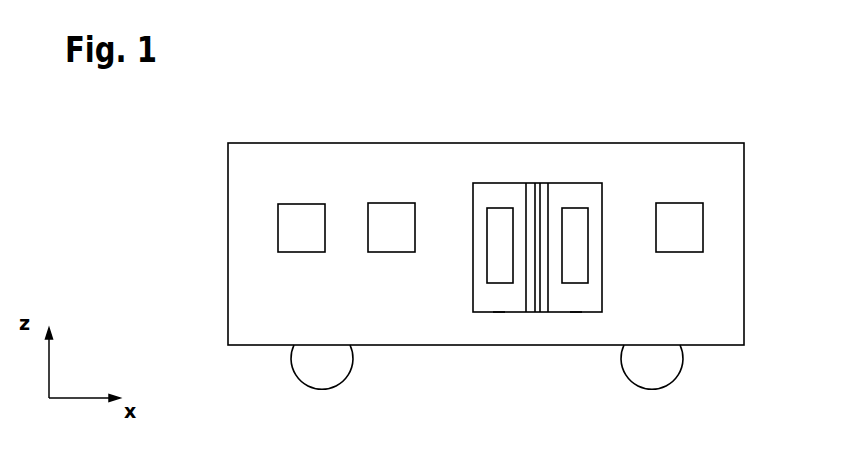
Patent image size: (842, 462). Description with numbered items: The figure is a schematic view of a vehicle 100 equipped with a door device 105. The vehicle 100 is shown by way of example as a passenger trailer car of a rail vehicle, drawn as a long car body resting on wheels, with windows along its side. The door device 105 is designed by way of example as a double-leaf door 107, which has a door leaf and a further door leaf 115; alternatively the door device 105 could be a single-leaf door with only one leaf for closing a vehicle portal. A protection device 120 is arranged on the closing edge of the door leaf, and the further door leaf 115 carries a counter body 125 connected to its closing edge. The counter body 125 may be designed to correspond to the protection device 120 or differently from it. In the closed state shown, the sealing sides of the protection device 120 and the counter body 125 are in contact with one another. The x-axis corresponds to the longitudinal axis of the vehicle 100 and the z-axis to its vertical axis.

The vehicle 100 is at (264, 114).
The door device 105 is at (539, 174).
The double-leaf door 107 is at (500, 324).
The further door leaf 115 is at (602, 198).
The protection device 120 is at (529, 183).
The counter body 125 is at (547, 183).